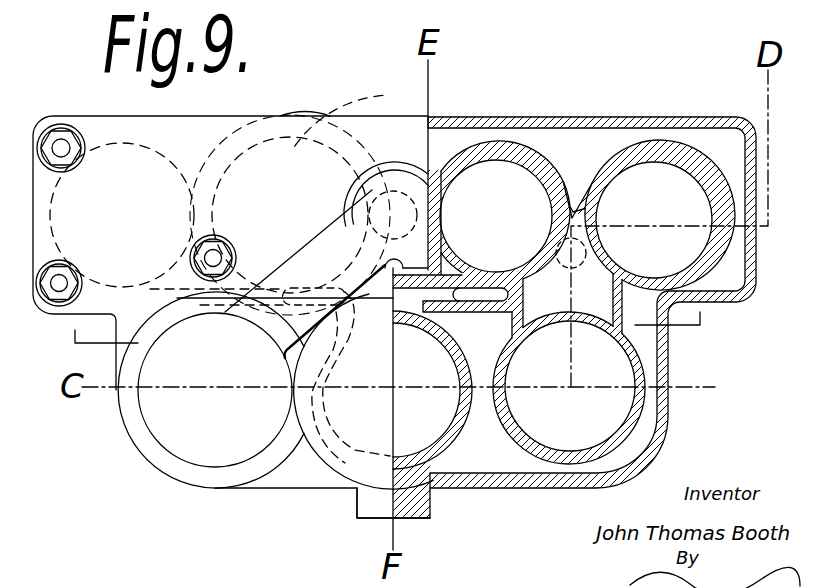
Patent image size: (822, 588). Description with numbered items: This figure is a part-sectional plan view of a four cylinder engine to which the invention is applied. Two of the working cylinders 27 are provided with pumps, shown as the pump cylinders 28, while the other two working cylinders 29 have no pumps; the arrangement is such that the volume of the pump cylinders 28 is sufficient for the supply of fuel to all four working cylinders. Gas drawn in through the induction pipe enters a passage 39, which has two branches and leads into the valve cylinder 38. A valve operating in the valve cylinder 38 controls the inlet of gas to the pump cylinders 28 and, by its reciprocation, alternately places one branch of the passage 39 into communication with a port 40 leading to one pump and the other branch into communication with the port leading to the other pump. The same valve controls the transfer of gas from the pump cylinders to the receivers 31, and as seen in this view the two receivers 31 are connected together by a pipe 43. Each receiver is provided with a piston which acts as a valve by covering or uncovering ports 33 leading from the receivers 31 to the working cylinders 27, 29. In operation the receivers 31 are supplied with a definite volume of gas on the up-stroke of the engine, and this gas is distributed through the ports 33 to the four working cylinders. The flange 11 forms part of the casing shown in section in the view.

The flange 11 is at (382, 336).
The working cylinder 27 is at (348, 119).
The pump cylinder 28 is at (300, 112).
The working cylinder 29 is at (107, 177).
The receiver 31 is at (700, 408).
The port 33 is at (587, 303).
The valve cylinder 38 is at (432, 410).
The passage 39 is at (404, 474).
The port 40 is at (405, 296).
The pipe 43 is at (326, 274).